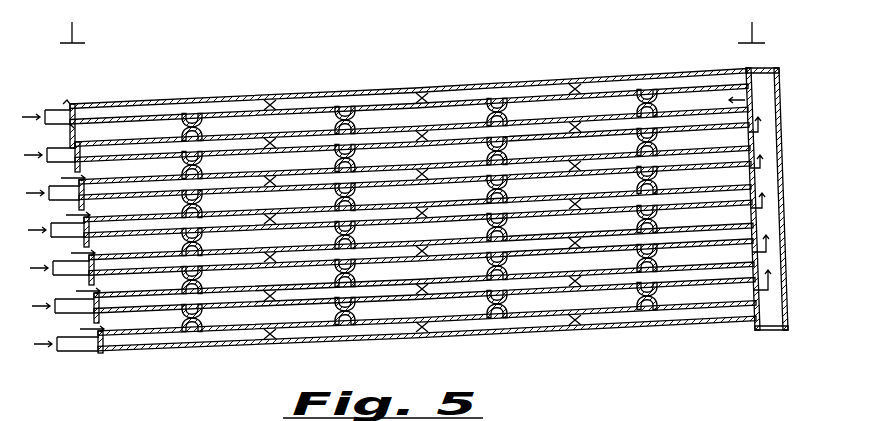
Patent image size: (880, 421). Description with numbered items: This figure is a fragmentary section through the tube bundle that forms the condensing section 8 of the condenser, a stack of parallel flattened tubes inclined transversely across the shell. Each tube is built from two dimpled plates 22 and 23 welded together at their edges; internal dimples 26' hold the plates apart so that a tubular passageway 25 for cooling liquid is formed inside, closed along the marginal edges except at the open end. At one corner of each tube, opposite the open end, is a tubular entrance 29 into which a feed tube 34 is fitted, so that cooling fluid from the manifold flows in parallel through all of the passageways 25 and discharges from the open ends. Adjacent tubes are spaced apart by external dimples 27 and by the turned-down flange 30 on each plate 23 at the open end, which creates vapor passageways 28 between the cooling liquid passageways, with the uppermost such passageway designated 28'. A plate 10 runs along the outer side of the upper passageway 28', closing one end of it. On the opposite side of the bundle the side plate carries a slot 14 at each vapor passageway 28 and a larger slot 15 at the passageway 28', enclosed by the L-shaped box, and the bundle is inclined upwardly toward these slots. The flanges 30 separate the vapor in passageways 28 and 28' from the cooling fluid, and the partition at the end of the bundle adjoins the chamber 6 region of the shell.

The chamber 6 is at (412, 21).
The condensing section 8 is at (196, 95).
The plate 10 is at (70, 133).
The slot 14 is at (745, 252).
The slot 15 is at (752, 98).
The dimpled plate 22 is at (482, 90).
The dimpled plate 23 is at (229, 117).
The tubular passageway 25 is at (543, 100).
The internal dimple 26' is at (360, 217).
The external dimple 27 is at (356, 108).
The vapor passageway 28 is at (415, 220).
The vapor passageway 28' is at (591, 187).
The tubular entrance 29 is at (108, 356).
The turned-down flange 30 is at (677, 105).
The tube 34 is at (75, 356).